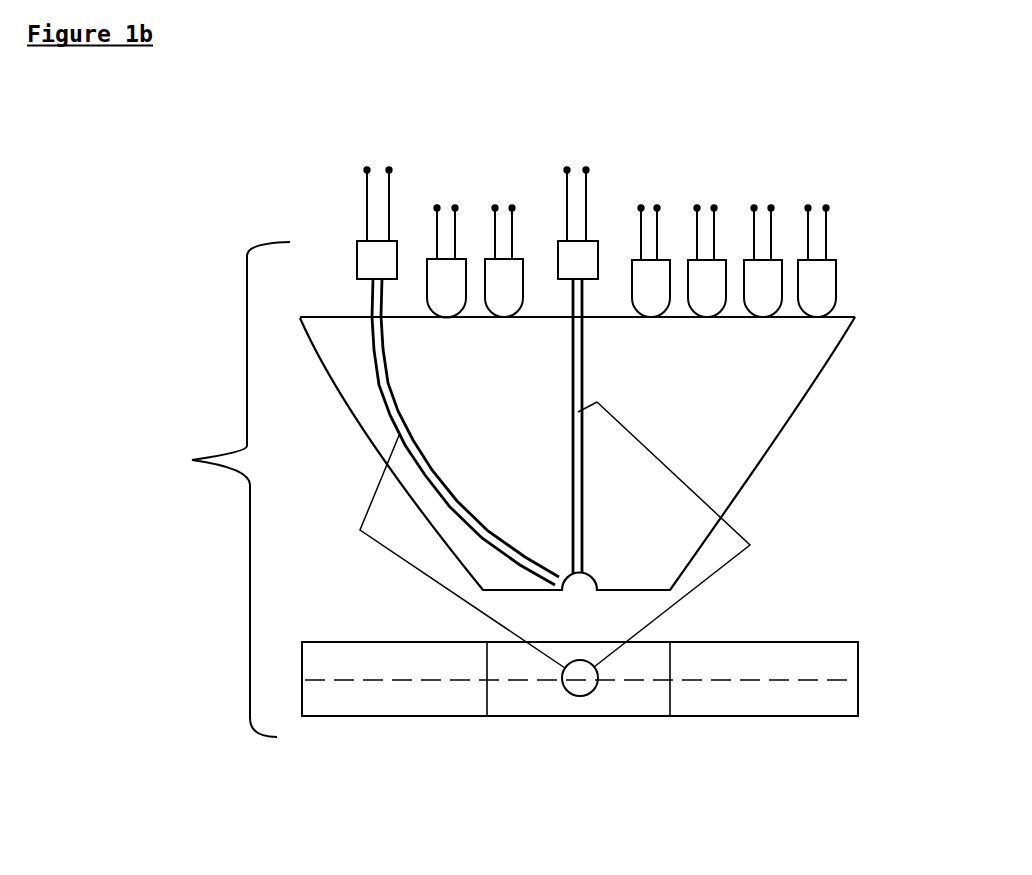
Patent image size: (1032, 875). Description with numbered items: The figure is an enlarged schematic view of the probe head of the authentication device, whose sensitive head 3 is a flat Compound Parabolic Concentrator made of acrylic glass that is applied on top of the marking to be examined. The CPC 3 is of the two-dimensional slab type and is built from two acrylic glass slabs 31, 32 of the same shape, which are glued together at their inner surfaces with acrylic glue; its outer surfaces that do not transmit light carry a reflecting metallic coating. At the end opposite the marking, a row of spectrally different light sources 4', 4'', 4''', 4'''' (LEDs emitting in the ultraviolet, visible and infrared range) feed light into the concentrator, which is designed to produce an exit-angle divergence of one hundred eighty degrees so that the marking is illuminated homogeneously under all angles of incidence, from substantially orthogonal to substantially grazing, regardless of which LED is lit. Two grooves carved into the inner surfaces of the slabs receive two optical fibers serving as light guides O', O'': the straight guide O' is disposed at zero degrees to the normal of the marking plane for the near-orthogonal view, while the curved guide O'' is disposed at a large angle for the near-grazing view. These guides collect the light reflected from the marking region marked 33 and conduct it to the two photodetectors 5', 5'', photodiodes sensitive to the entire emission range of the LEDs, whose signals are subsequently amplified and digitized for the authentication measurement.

The sensitive head 3 is at (763, 418).
The acrylic glass slab 31 is at (580, 679).
The acrylic glass slab 32 is at (580, 694).
The light exit point 33 is at (580, 678).
The light source 4' is at (817, 261).
The light source 4'' is at (633, 261).
The light source 4''' is at (576, 261).
The light source 4'''' is at (651, 261).
The photodetector 5' is at (578, 370).
The photodetector 5'' is at (458, 376).
The light guide O' is at (683, 534).
The light guide O'' is at (429, 550).